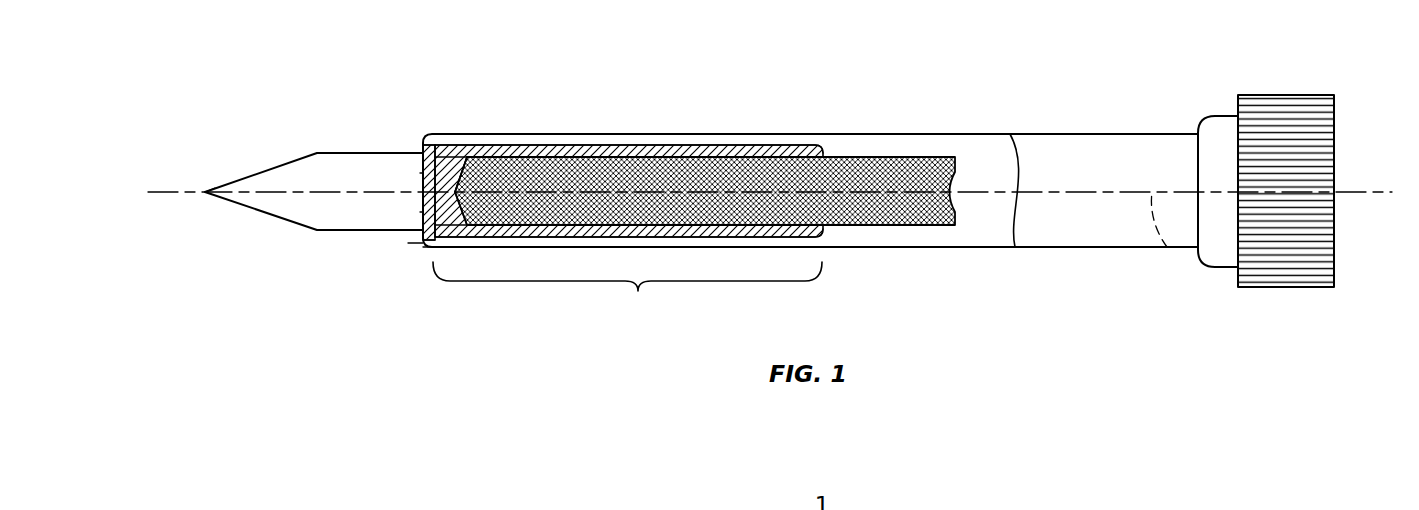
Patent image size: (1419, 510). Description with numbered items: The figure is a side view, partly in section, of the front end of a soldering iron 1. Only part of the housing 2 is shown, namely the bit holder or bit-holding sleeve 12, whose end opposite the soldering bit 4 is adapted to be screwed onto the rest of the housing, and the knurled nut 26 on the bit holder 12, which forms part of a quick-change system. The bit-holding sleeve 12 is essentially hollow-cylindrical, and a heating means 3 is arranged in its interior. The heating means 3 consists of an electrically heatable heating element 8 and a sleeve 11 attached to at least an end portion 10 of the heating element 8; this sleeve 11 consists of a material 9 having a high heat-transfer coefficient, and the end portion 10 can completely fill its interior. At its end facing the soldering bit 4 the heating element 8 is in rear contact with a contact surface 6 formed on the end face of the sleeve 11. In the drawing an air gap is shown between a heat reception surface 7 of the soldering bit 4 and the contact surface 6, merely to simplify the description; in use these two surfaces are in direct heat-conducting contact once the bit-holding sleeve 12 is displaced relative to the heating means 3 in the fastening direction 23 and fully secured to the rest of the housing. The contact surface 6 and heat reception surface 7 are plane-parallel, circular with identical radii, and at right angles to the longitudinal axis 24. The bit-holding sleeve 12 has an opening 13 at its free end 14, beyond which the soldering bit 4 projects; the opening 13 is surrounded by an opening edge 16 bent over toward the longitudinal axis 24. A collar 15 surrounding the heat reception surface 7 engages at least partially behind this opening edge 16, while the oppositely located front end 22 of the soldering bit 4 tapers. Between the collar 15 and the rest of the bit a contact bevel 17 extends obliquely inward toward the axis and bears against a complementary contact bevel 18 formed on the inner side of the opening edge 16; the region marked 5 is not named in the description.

The soldering iron 1 is at (1109, 100).
The housing 2 is at (1167, 129).
The heating means 3 is at (836, 141).
The soldering bit 4 is at (308, 156).
The inner surface 5 is at (420, 212).
The contact surface 6 is at (425, 243).
The heat reception surface 7 is at (439, 174).
The heating element 8 is at (610, 172).
The material 9 is at (778, 146).
The end portion 10 is at (638, 292).
The sleeve 11 is at (629, 233).
The bit holder or sleeve 12 is at (957, 248).
The opening 13 is at (419, 147).
The free end 14 is at (406, 246).
The collar 15 is at (465, 160).
The opening edge 16 is at (428, 144).
The contact bevel 17 is at (420, 173).
The complementary contact bevel 18 is at (428, 250).
The front end 22 is at (205, 190).
The fastening direction 23 is at (1054, 77).
The longitudinal axis 24 is at (1167, 247).
The knurled nut 26 is at (1270, 138).